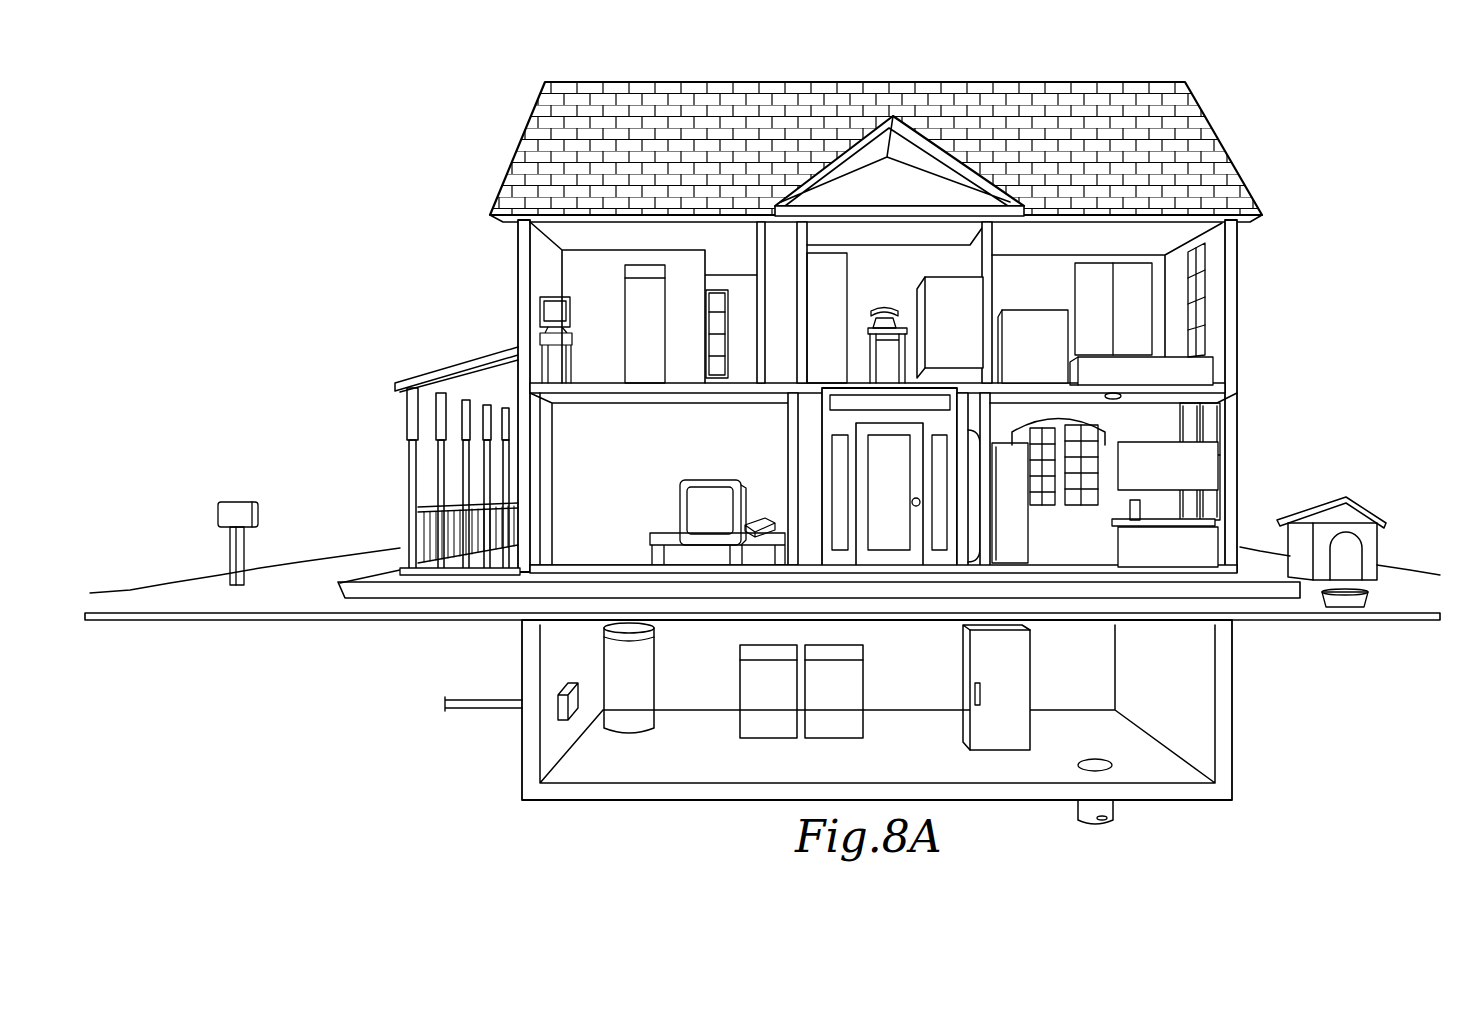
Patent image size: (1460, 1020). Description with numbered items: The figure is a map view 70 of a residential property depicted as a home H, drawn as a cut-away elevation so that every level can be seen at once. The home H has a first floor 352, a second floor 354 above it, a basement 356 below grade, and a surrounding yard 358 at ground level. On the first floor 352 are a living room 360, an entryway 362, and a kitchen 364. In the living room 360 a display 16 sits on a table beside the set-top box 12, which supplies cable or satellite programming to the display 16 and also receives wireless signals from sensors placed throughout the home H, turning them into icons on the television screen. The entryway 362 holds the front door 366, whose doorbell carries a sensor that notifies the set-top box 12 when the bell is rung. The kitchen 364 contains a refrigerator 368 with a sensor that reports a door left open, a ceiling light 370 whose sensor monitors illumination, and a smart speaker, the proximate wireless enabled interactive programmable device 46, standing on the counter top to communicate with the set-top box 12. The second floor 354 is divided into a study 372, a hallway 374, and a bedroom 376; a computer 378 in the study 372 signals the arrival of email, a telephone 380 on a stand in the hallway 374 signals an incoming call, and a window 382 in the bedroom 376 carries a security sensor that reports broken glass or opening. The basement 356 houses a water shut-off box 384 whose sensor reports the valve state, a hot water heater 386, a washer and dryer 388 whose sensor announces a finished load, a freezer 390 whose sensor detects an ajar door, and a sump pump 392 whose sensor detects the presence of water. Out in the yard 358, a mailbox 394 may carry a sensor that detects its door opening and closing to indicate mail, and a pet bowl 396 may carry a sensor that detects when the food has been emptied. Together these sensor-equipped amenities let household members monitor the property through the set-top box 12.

The map view 70 is at (1248, 92).
The home H is at (520, 272).
The second floor 354 is at (1237, 318).
The first floor 352 is at (1237, 458).
The basement 356 is at (1230, 722).
The yard 358 is at (140, 595).
The living room 360 is at (685, 447).
The entryway 362 is at (913, 429).
The kitchen 364 is at (1118, 549).
The front door 366 is at (916, 507).
The refrigerator 368 is at (1030, 513).
The light 370 is at (1115, 400).
The study 372 is at (615, 282).
The hallway 374 is at (945, 266).
The bedroom 376 is at (1048, 289).
The computer 378 is at (555, 305).
The telephone 380 is at (880, 312).
The window 382 is at (1205, 267).
The water shut-off box 384 is at (573, 705).
The hot water heater 386 is at (650, 667).
The washer and dryer 388 is at (862, 672).
The freezer 390 is at (1030, 688).
The sump pump 392 is at (1110, 820).
The mailbox 394 is at (238, 500).
The pet bowl 396 is at (1370, 598).
The set-top box 12 is at (757, 518).
The display 16 is at (690, 500).
The proximate wireless enabled interactive programmable device 46 is at (1145, 512).